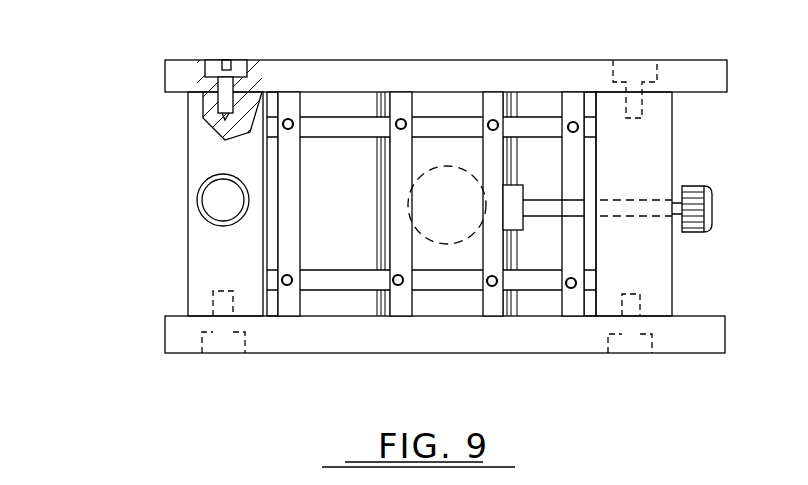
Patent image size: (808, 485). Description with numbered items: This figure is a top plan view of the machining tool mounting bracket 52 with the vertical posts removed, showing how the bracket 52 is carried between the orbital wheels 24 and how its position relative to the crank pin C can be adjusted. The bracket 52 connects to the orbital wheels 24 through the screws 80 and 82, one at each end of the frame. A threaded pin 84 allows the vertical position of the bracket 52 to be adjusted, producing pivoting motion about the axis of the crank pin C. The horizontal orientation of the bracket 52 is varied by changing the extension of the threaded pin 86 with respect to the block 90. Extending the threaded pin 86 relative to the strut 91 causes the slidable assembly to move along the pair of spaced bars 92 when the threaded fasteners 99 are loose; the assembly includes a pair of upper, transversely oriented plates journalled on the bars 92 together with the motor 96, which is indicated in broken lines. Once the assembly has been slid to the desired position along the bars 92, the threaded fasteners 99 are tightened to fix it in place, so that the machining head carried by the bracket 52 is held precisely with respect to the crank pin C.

The orbital wheels 24 is at (720, 80).
The machining tool mounting bracket 52 is at (483, 368).
The screw 80 is at (223, 60).
The screw 82 is at (648, 68).
The threaded pin 84 is at (213, 207).
The threaded pin 86 is at (713, 205).
The block 90 is at (658, 148).
The strut 91 is at (287, 305).
The spaced bars 92 is at (348, 125).
The motor 96 is at (468, 167).
The threaded fasteners 99 is at (482, 127).
The crank pin C is at (373, 302).